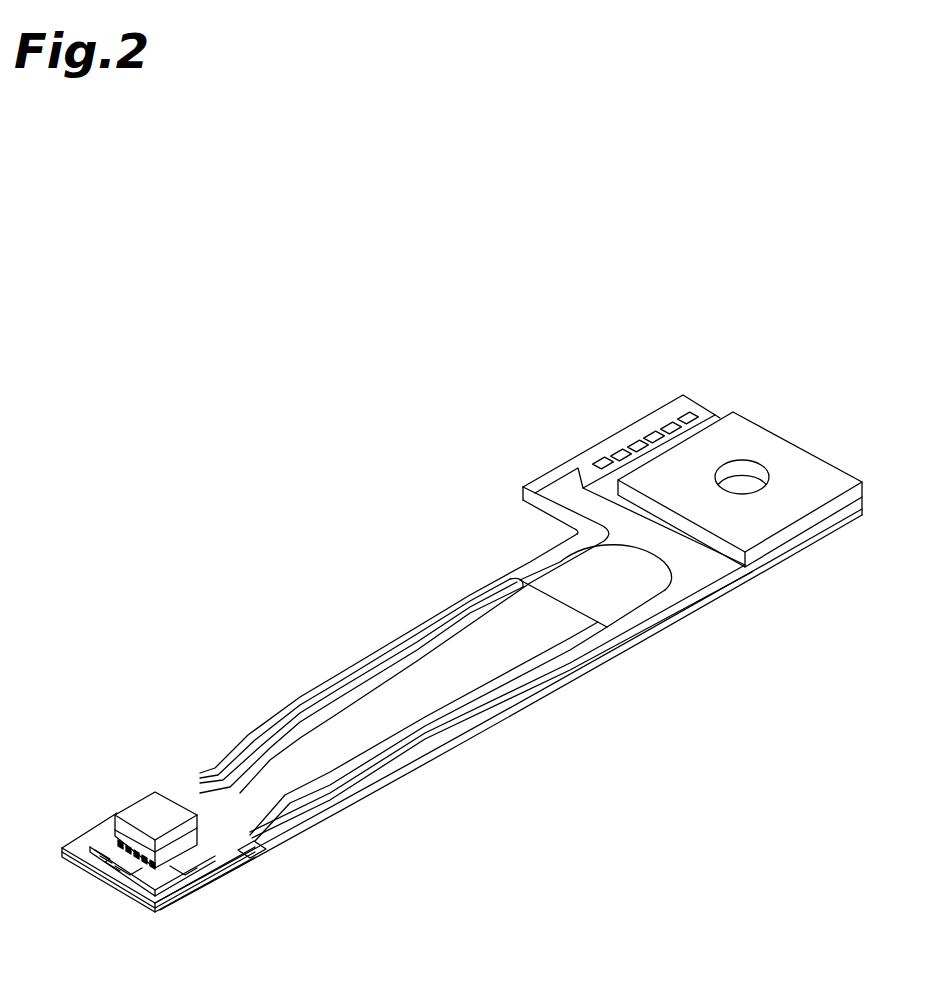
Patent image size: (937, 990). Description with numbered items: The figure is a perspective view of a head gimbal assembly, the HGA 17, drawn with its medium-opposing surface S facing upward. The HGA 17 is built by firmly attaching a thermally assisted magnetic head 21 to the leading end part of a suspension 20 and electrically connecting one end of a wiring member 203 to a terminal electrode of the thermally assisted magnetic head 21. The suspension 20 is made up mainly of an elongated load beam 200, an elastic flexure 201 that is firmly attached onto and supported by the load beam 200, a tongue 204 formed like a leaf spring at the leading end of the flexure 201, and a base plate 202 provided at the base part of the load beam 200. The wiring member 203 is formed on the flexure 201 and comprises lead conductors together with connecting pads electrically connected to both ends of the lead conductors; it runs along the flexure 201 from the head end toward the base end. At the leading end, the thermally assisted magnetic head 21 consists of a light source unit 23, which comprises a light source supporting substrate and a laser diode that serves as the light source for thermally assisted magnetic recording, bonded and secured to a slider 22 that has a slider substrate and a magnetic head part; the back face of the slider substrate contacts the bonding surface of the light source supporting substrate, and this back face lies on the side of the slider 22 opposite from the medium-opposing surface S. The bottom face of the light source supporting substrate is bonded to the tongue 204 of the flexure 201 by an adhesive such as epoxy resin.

The HGA 17 is at (474, 636).
The suspension 20 is at (446, 592).
The load beam 200 is at (708, 572).
The flexure 201 is at (531, 638).
The base plate 202 is at (818, 478).
The wiring member 203 is at (370, 757).
The tongue 204 is at (180, 850).
The thermally assisted magnetic head 21 is at (243, 820).
The slider 22 is at (178, 852).
The light source unit 23 is at (178, 835).
The medium-opposing surface S is at (148, 813).